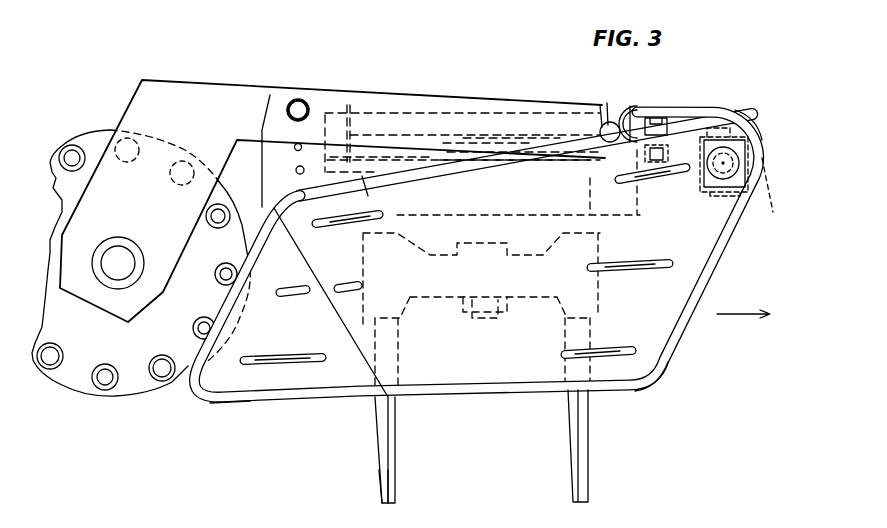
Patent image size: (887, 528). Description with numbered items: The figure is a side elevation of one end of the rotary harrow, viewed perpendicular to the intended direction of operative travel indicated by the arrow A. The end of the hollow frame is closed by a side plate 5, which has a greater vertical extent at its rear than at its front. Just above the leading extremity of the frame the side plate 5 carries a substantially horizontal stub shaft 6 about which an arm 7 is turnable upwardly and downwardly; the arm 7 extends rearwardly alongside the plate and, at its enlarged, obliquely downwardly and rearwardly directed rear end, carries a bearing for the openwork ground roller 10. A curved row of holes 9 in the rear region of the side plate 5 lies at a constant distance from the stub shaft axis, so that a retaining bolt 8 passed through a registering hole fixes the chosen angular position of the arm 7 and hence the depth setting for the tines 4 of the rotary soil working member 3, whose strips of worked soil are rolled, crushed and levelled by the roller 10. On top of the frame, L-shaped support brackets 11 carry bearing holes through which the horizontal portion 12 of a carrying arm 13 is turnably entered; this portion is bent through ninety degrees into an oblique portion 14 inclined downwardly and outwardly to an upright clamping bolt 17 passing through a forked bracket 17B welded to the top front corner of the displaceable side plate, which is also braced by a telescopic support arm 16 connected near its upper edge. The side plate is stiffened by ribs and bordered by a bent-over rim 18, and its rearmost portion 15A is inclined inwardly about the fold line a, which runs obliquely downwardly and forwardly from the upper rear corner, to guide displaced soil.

The rotary soil working member 3 is at (402, 450).
The tine 4 is at (395, 492).
The side plate 5 is at (270, 150).
The stub shaft 6 is at (622, 110).
The arm 7 is at (200, 96).
The retaining bolt 8 is at (300, 98).
The hole 9 is at (295, 171).
The ground roller 10 is at (95, 130).
The support bracket 11 is at (348, 103).
The horizontal portion 12 is at (424, 112).
The carrying arm 13 is at (714, 106).
The oblique portion 14 is at (761, 135).
The rearmost portion 15A is at (237, 377).
The telescopic support arm 16 is at (660, 119).
The clamping bolt 17 is at (717, 195).
The forked bracket 17B is at (768, 197).
The rim 18 is at (655, 384).
The fold line a is at (340, 315).
The direction of operative travel A is at (747, 310).